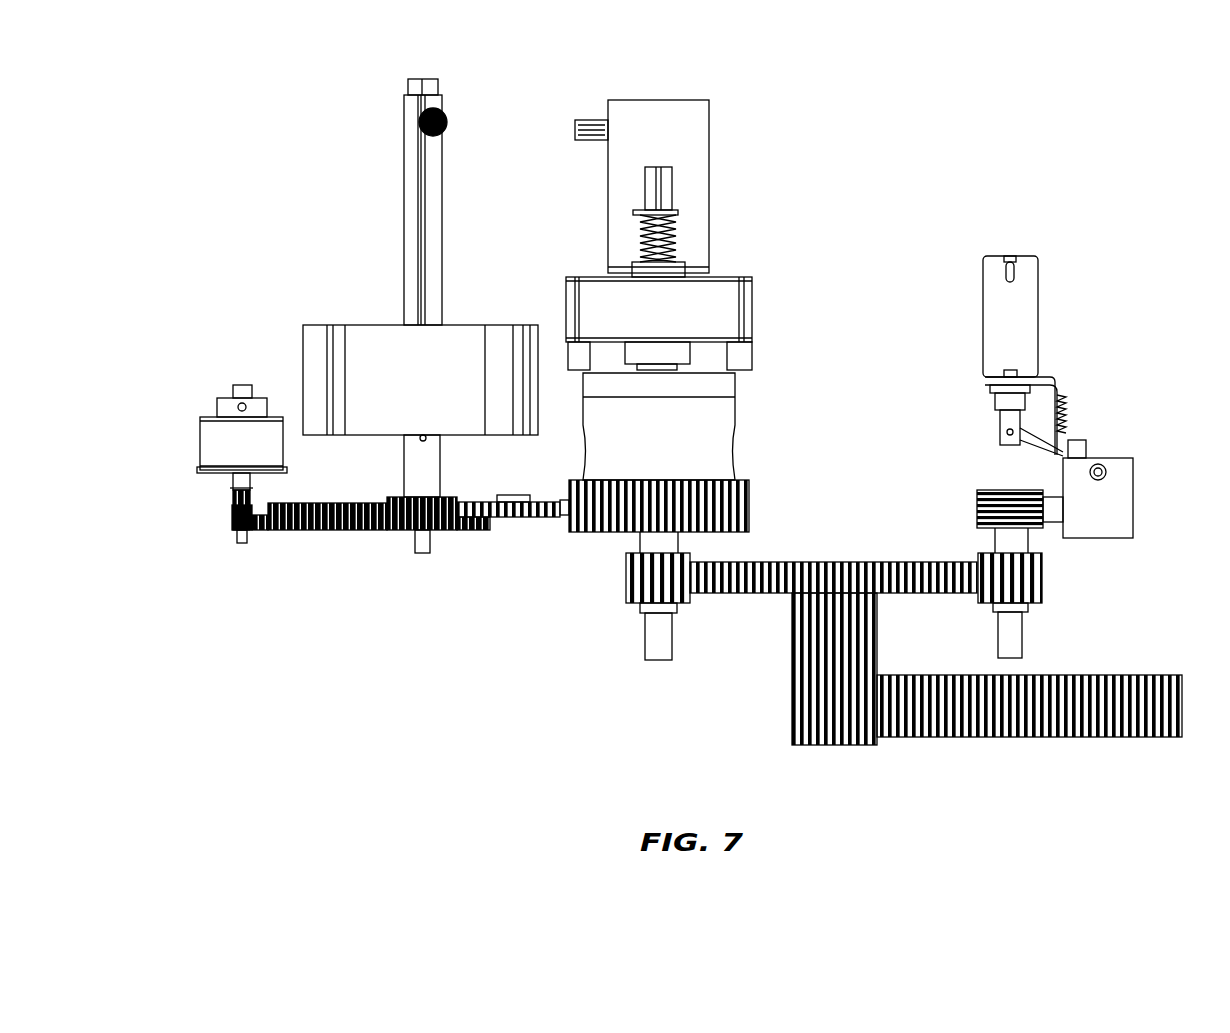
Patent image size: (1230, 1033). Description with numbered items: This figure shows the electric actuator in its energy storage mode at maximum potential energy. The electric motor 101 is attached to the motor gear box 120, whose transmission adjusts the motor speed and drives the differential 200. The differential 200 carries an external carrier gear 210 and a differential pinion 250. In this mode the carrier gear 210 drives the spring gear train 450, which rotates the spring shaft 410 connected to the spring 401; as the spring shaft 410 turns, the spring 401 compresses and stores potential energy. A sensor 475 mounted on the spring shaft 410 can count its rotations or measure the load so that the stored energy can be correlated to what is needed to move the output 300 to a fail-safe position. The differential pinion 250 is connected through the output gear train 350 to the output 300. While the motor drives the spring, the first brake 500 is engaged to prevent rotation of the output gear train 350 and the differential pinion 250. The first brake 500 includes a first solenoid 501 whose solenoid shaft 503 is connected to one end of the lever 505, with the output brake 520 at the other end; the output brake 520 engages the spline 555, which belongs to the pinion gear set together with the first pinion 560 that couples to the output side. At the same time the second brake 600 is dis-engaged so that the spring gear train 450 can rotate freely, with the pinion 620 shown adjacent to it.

The electric motor 101 is at (712, 140).
The motor gear box 120 is at (753, 305).
The differential 200 is at (745, 407).
The carrier gear 210 is at (752, 512).
The differential pinion 250 is at (625, 568).
The output 300 is at (843, 745).
The output gear train 350 is at (720, 600).
The spring 401 is at (328, 322).
The spring shaft 410 is at (434, 190).
The spring gear train 450 is at (320, 540).
The sensor 475 is at (447, 122).
The first brake 500 is at (1108, 247).
The first solenoid 501 is at (1040, 305).
The solenoid shaft 503 is at (1000, 413).
The lever 505 is at (1093, 445).
The output brake 520 is at (1050, 522).
The spline 555 is at (970, 497).
The first pinion 560 is at (1042, 593).
The second brake 600 is at (190, 378).
The motor pinion 620 is at (232, 510).